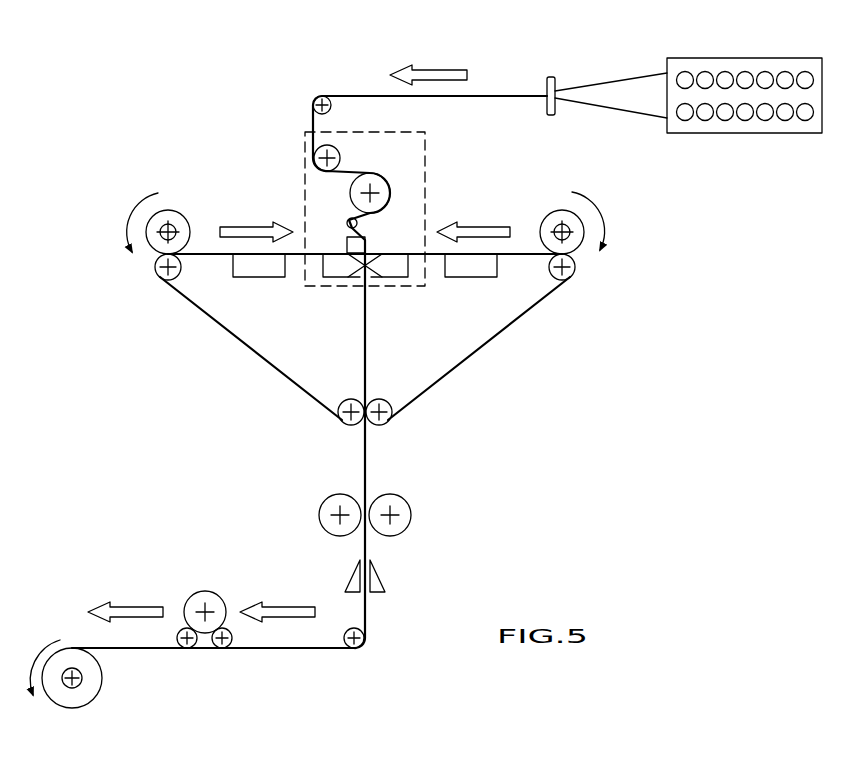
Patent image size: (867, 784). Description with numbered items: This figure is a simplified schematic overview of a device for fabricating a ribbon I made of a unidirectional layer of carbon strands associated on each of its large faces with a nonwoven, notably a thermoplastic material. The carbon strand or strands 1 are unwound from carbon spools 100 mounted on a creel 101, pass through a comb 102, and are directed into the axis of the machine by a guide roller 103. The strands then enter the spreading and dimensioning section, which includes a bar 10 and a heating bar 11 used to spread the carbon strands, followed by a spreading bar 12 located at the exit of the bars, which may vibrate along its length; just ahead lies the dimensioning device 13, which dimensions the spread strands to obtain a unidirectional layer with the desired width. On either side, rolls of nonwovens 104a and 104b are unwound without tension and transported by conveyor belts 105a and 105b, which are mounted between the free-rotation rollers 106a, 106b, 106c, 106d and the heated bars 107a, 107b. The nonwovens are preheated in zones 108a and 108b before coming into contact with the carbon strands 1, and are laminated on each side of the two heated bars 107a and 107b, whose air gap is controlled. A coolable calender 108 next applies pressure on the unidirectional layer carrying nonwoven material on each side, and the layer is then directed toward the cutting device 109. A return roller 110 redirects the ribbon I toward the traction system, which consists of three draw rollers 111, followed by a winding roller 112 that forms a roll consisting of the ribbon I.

The carbon strand 1 is at (468, 98).
The carbon spool 100 is at (803, 72).
The creel 101 is at (742, 134).
The comb 102 is at (561, 68).
The guide roller 103 is at (318, 97).
The bar 10 is at (314, 170).
The heating bar 11 is at (380, 183).
The spreading bar 12 is at (348, 220).
The dimensioning device 13 is at (347, 243).
The roll of nonwoven 104a is at (178, 217).
The roll of nonwoven 104b is at (550, 217).
The conveyor belt 105a is at (243, 345).
The conveyor belt 105b is at (483, 345).
The free-rotation roller 106a is at (157, 273).
The free-rotation roller 106b is at (342, 425).
The free-rotation roller 106c is at (592, 280).
The free-rotation roller 106d is at (389, 425).
The heated bar 107a is at (338, 273).
The heated bar 107b is at (393, 273).
The preheating zone 108a is at (257, 276).
The preheating zone 108b is at (473, 276).
The coolable calender 108 is at (306, 503).
The cutting device 109 is at (394, 573).
The return roller 110 is at (366, 644).
The draw rollers 111 is at (187, 588).
The winding roller 112 is at (73, 702).
The ribbon I is at (282, 650).